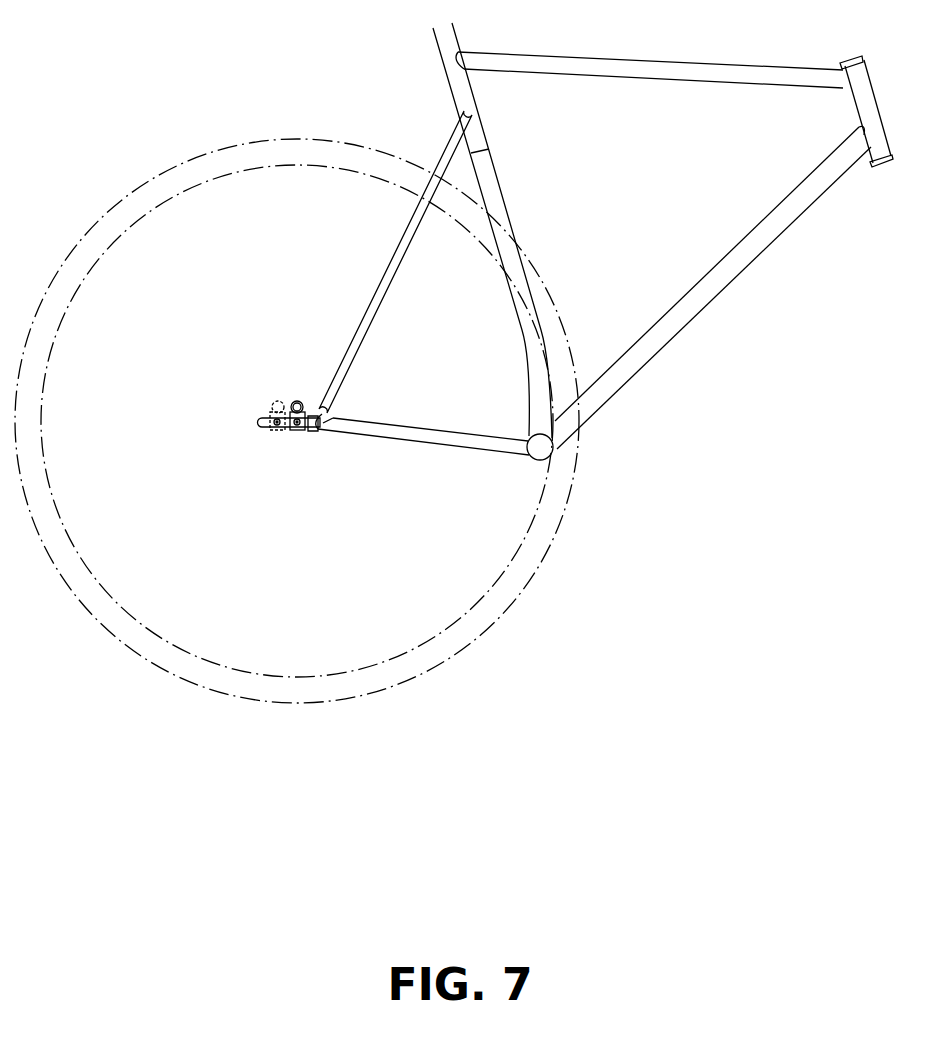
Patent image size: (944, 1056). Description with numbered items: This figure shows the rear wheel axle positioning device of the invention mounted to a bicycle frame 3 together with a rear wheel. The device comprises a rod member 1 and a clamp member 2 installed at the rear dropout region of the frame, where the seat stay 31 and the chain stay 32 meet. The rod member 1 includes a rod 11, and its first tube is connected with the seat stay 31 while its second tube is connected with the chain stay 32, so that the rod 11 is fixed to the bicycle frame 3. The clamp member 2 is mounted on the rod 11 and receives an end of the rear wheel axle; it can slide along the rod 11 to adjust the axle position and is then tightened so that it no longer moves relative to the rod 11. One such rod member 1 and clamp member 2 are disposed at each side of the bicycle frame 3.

The rod member 1 is at (271, 422).
The rod 11 is at (266, 430).
The clamp member 2 is at (292, 401).
The bicycle frame 3 is at (592, 276).
The seat stay 31 is at (355, 343).
The chain stay 32 is at (408, 437).